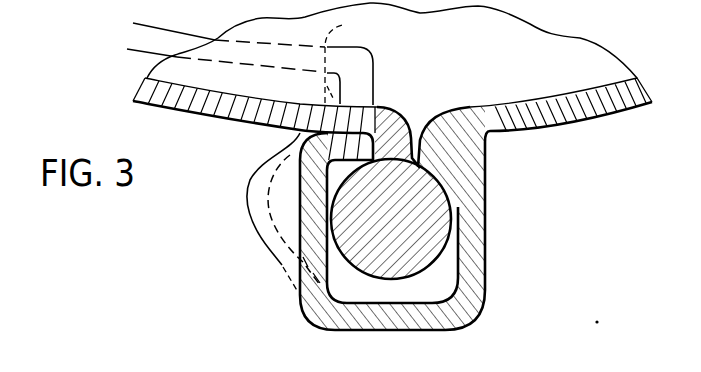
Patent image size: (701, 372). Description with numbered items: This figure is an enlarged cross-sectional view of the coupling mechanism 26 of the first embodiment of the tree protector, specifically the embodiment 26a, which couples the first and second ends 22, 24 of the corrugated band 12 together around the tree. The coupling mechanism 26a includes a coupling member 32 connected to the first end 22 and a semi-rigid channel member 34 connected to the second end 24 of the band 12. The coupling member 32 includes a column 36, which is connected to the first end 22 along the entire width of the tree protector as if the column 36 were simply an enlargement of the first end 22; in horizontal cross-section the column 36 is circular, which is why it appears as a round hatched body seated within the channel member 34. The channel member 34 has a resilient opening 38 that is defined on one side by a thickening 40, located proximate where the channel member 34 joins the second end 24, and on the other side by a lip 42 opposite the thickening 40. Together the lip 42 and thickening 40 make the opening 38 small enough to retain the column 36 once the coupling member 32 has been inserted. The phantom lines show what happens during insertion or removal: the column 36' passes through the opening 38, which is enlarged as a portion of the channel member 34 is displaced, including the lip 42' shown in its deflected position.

The band 12 is at (599, 116).
The first end 22 is at (284, 136).
The second end 24 is at (505, 131).
The coupling mechanism 26 is at (303, 316).
The coupling mechanism embodiment 26a is at (278, 311).
The coupling member 32 is at (438, 267).
The channel member 34 is at (469, 324).
The column 36 is at (430, 192).
The column (phantom, during insertion or removal) 36' is at (253, 59).
The resilient opening 38 is at (415, 110).
The thickening 40 is at (450, 130).
The lip 42 is at (343, 151).
The lip (phantom, displaced position) 42' is at (255, 220).